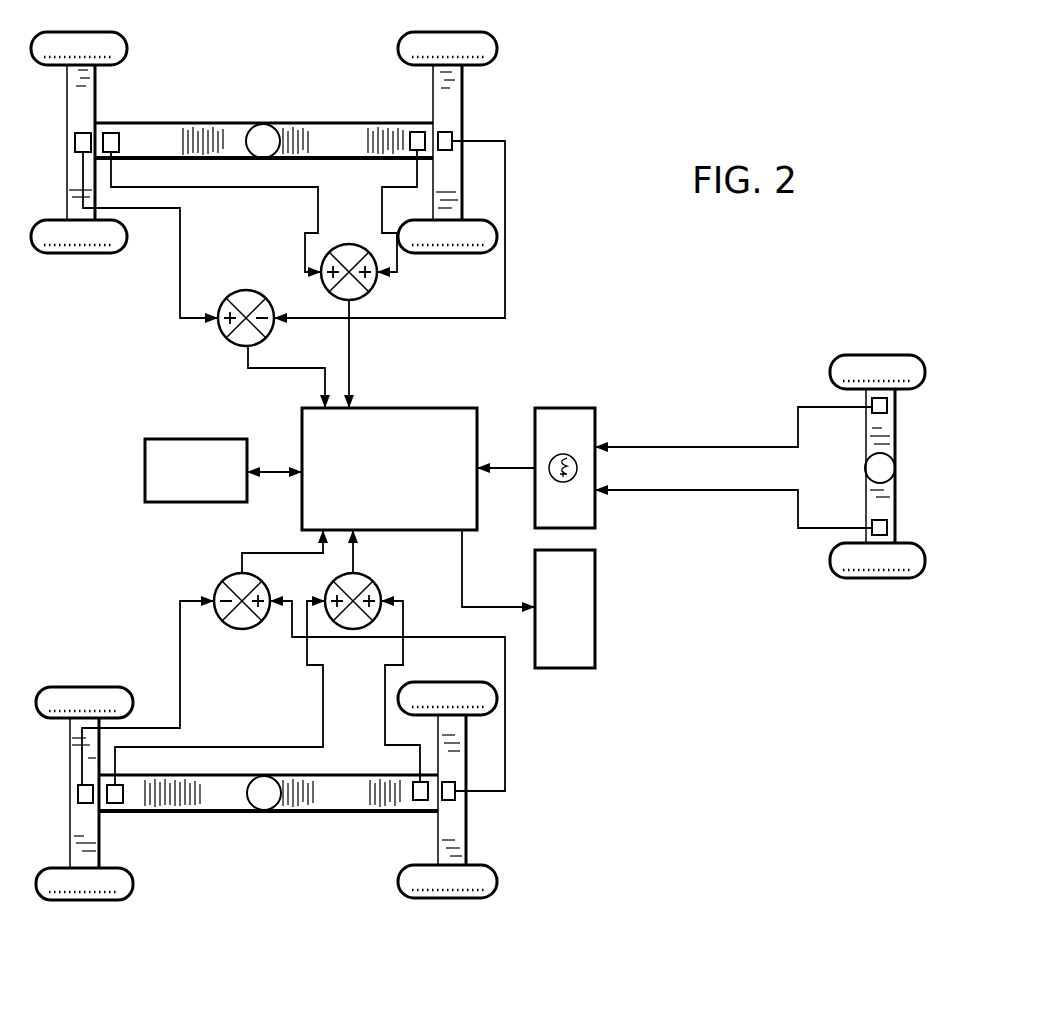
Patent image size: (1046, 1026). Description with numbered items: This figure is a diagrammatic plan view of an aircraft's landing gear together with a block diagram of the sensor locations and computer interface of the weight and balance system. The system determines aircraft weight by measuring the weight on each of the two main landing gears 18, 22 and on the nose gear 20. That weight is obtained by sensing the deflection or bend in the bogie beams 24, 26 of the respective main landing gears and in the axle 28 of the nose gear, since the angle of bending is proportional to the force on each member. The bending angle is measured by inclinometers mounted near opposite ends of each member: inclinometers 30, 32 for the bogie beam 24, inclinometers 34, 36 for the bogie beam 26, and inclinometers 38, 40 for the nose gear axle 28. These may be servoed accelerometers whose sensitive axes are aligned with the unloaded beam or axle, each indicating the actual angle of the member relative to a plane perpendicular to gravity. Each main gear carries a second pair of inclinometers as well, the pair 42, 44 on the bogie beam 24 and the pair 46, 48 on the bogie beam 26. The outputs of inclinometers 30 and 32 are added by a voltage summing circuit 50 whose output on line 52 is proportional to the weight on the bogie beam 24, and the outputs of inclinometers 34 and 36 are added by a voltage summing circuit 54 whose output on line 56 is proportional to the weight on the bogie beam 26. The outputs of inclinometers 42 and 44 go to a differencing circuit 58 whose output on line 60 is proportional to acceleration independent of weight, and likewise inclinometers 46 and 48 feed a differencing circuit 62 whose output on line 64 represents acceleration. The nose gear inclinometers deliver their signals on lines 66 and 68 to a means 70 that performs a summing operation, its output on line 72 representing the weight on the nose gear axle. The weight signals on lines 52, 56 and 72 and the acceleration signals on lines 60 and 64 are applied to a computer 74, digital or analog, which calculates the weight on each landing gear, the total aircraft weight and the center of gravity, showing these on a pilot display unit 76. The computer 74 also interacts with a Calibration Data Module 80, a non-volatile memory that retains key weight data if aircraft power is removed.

The main landing gear 18 is at (272, 791).
The nose gear 20 is at (871, 466).
The main landing gear 22 is at (278, 142).
The bogie beam 24 is at (312, 811).
The bogie beam 26 is at (345, 122).
The axle 28 is at (890, 505).
The inclinometer 30 is at (123, 796).
The inclinometer 32 is at (413, 793).
The inclinometer 34 is at (120, 140).
The inclinometer 36 is at (410, 136).
The inclinometer 38 is at (887, 404).
The inclinometer 40 is at (879, 519).
The inclinometer 42 is at (78, 790).
The inclinometer 44 is at (455, 800).
The inclinometer 46 is at (83, 133).
The inclinometer 48 is at (453, 138).
The voltage summing circuit 50 is at (374, 577).
The line 52 is at (357, 556).
The voltage summing circuit 54 is at (372, 288).
The line 56 is at (349, 373).
The differencing circuit 58 is at (228, 580).
The line 60 is at (285, 553).
The differencing circuit 62 is at (236, 342).
The line 64 is at (305, 376).
The line 66 is at (690, 447).
The line 68 is at (720, 492).
The summing means 70 is at (568, 408).
The line 72 is at (508, 467).
The computer 74 is at (393, 478).
The pilot display unit 76 is at (590, 633).
The Calibration Data Module 80 is at (145, 484).